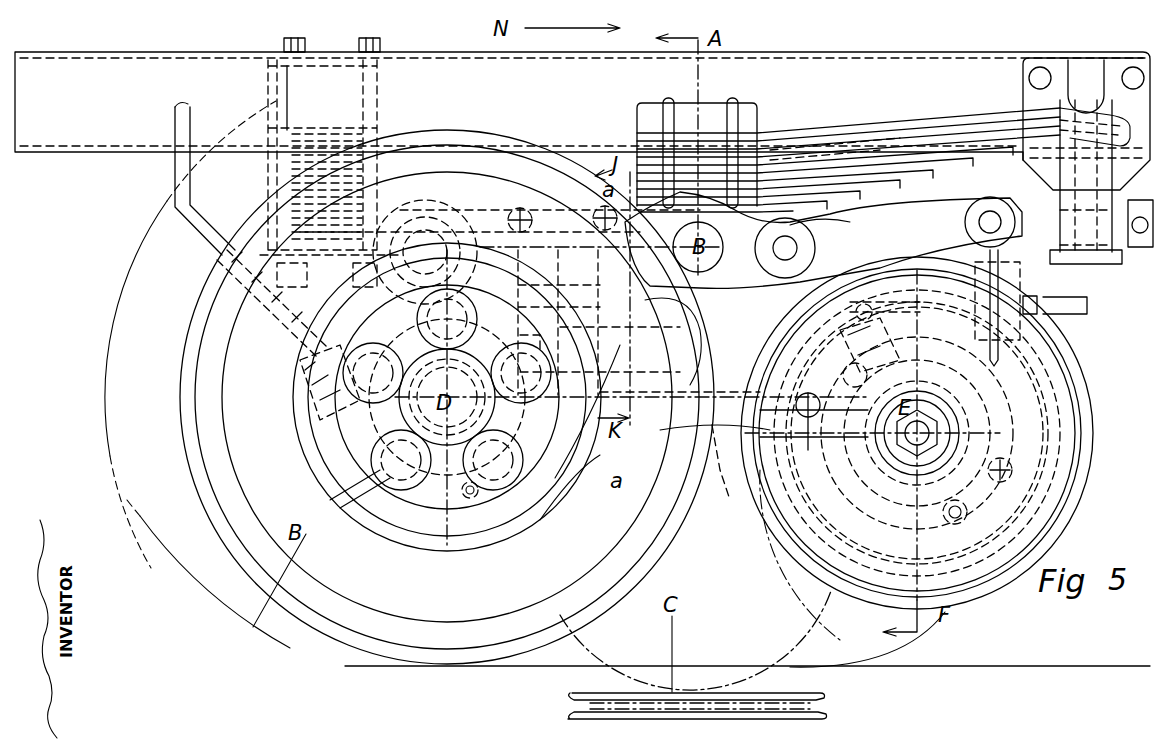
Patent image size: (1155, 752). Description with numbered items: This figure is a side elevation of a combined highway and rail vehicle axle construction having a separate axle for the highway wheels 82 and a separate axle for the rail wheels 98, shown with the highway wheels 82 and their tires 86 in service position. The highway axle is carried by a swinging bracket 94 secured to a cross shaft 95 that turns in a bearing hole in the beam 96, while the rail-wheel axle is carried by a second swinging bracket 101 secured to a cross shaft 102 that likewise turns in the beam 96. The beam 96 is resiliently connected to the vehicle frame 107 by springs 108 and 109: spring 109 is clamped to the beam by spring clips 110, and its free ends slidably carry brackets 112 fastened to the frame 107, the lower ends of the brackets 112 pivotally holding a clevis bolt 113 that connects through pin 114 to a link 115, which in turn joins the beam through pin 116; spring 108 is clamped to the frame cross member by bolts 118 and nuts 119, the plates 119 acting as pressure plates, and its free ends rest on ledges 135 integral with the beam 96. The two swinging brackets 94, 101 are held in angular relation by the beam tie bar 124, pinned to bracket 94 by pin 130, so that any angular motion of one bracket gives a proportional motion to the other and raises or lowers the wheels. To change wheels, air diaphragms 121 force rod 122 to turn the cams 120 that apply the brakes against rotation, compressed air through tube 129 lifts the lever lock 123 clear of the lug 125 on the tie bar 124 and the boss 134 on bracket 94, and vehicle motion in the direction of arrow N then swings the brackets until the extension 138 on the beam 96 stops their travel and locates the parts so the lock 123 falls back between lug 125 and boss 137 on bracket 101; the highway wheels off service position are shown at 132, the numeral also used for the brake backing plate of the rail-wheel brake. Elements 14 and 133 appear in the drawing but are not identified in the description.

The brake hanger 14 is at (722, 464).
The highway wheels 82 is at (396, 528).
The tires and tubes 86 is at (182, 380).
The swinging bracket 94 is at (388, 304).
The cross shaft 95 is at (428, 220).
The beam 96 is at (503, 202).
The rail wheel 98 is at (1072, 505).
The swinging bracket 101 is at (818, 262).
The cross shaft 102 is at (650, 334).
The vehicle frame 107 is at (806, 53).
The spring 108 is at (300, 168).
The spring 109 is at (846, 126).
The spring clips 110 is at (667, 100).
The brackets 112 is at (1068, 70).
The clevis bolt 113 is at (1072, 255).
The pin 114 is at (993, 211).
The link 115 is at (890, 216).
The pin 116 is at (802, 226).
The bolts 118 is at (286, 217).
The pressure plates 119 is at (322, 52).
The cams 120 is at (478, 496).
The air diaphragms 121 is at (305, 410).
The rod 122 is at (880, 278).
The lever lock 123 is at (468, 497).
The beam tie bar 124 is at (648, 400).
The lug 125 is at (608, 364).
The tube 129 is at (585, 486).
The pin 130 is at (540, 364).
The brake backing plate 132 is at (286, 638).
The rail 133 is at (674, 696).
The boss 134 is at (300, 320).
The ledges 135 is at (596, 214).
The boss 137 is at (662, 430).
The extension 138 is at (598, 448).